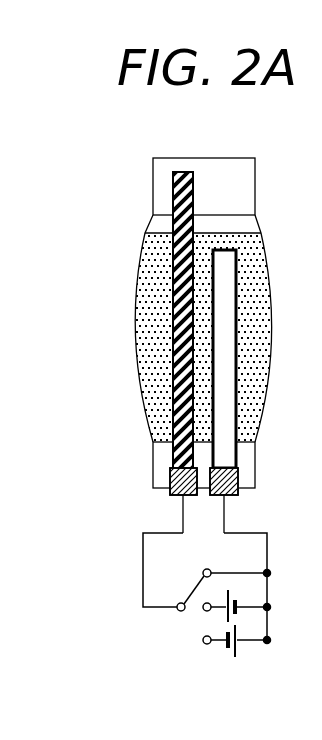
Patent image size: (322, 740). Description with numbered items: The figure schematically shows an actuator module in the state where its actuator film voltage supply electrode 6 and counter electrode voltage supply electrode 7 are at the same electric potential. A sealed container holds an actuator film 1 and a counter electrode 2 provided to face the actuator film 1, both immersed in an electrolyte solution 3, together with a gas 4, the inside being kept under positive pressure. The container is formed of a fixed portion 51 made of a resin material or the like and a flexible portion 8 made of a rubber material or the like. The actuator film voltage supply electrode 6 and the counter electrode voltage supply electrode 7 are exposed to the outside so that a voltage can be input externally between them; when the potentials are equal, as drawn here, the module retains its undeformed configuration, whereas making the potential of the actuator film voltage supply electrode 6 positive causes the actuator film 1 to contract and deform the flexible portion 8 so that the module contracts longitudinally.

The actuator film 1 is at (172, 283).
The counter electrode 2 is at (220, 290).
The electrolyte solution 3 is at (148, 345).
The gas 4 is at (242, 225).
The fixed portion 51 is at (235, 183).
The actuator film voltage supply electrode 6 is at (182, 473).
The counter electrode voltage supply electrode 7 is at (220, 480).
The flexible portion 8 is at (274, 362).